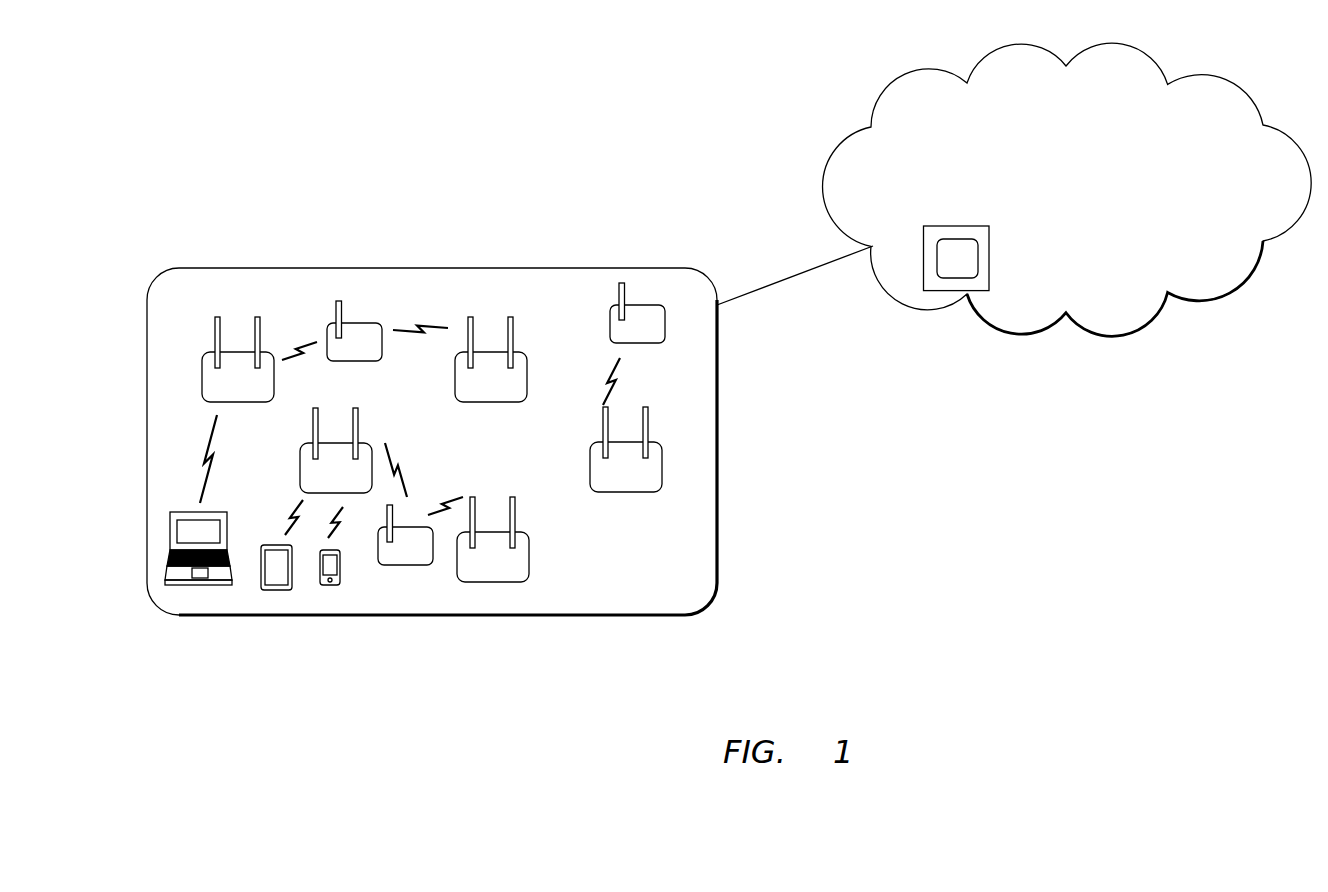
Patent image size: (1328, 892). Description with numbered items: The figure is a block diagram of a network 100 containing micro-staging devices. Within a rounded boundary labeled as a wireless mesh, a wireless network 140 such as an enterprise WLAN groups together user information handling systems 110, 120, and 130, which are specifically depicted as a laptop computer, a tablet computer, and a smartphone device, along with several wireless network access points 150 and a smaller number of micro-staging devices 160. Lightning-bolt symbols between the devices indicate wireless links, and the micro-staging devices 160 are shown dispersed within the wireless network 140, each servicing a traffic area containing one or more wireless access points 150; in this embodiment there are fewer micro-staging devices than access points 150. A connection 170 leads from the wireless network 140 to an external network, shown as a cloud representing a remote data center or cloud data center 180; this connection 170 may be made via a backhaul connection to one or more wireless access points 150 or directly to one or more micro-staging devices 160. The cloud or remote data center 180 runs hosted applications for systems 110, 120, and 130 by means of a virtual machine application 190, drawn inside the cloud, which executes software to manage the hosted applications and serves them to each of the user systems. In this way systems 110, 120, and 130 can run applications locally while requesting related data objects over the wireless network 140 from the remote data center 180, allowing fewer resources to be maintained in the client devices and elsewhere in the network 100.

The network 100 is at (246, 76).
The networked information handling system 110 is at (190, 585).
The networked information handling system 120 is at (273, 590).
The networked information handling system 130 is at (333, 585).
The wireless network 140 is at (225, 268).
The wireless network access point 150 is at (522, 347).
The micro-staging device 160 is at (333, 325).
The connection to external network 170 is at (774, 283).
The remote data center or cloud data center 180 is at (1112, 340).
The virtual machine application 190 is at (939, 291).